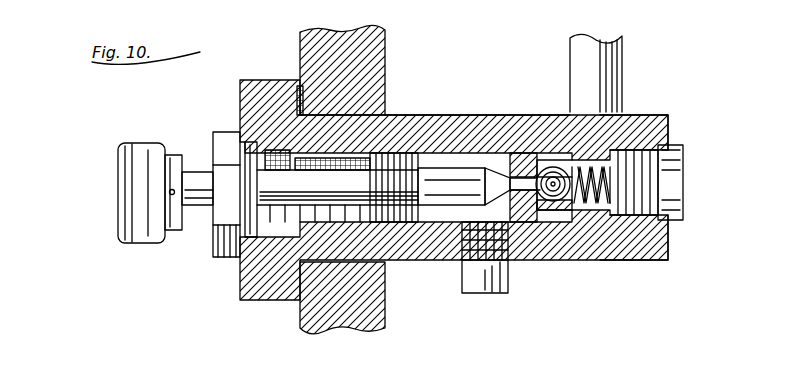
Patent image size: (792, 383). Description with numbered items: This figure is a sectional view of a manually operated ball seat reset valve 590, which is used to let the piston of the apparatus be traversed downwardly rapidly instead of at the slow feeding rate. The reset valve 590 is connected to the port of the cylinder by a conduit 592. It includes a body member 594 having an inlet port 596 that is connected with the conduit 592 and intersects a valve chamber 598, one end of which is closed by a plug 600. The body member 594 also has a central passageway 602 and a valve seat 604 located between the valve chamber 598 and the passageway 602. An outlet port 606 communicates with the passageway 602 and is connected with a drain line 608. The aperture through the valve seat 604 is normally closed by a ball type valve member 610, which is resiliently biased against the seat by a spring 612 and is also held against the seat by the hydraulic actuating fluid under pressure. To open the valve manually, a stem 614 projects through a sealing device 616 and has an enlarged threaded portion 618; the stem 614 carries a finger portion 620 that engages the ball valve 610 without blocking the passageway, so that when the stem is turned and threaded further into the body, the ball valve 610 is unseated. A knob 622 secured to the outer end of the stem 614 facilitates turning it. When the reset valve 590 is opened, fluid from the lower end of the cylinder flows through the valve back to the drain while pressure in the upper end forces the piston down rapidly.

The reset valve 590 is at (441, 115).
The conduit 592 is at (605, 70).
The body member 594 is at (487, 125).
The inlet port 596 is at (583, 160).
The valve chamber 598 is at (622, 257).
The plug 600 is at (683, 182).
The central passageway 602 is at (533, 165).
The valve seat 604 is at (545, 165).
The outlet port 606 is at (462, 230).
The drain line 608 is at (475, 285).
The ball type valve member 610 is at (556, 200).
The spring 612 is at (668, 129).
The stem 614 is at (305, 178).
The sealing device 616 is at (218, 243).
The enlarged threaded portion 618 is at (398, 165).
The finger portion 620 is at (516, 176).
The knob 622 is at (147, 150).